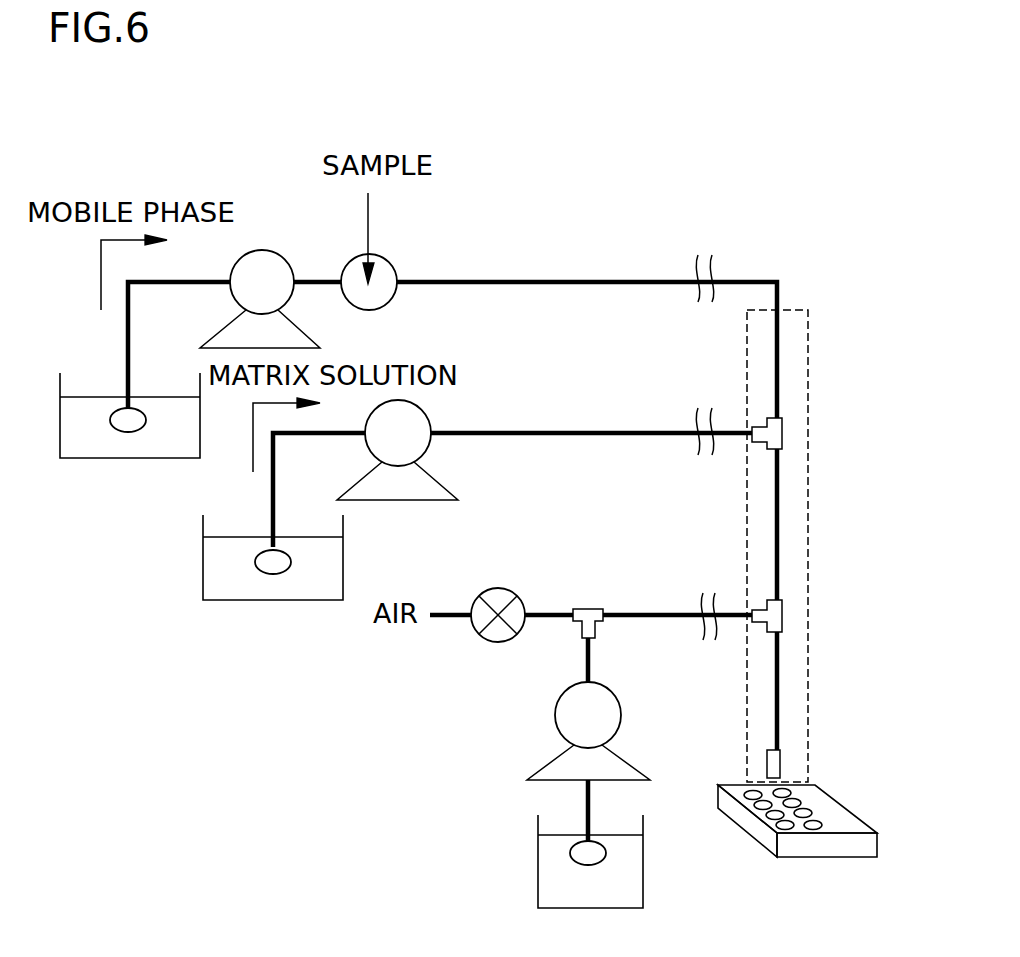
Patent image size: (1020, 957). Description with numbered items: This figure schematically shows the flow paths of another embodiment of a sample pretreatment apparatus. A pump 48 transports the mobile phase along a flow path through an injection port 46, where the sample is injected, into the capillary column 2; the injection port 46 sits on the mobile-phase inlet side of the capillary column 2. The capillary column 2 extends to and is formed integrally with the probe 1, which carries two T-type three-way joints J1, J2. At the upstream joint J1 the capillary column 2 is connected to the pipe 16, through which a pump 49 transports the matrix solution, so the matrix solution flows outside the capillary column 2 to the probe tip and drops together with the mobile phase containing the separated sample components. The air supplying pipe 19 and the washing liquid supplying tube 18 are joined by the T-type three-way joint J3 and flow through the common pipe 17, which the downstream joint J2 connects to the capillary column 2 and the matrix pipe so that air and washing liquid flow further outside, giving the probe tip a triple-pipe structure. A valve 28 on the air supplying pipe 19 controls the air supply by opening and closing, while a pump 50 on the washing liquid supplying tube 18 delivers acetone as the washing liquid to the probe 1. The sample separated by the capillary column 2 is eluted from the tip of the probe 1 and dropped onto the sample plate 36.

The probe 1 is at (810, 360).
The capillary column 2 is at (573, 282).
The pipe 16 is at (527, 433).
The pipe 17 is at (657, 618).
The washing liquid supplying tube 18 is at (593, 665).
The air supplying pipe 19 is at (555, 612).
The valve 28 is at (502, 635).
The sample plate 36 is at (845, 822).
The injection port 46 is at (380, 283).
The pump 48 is at (267, 263).
The pump 49 is at (418, 430).
The pump 50 is at (570, 715).
The T-type three-way joint J1 is at (780, 438).
The T-type three-way joint J2 is at (780, 617).
The T-type three-way joint J3 is at (590, 608).